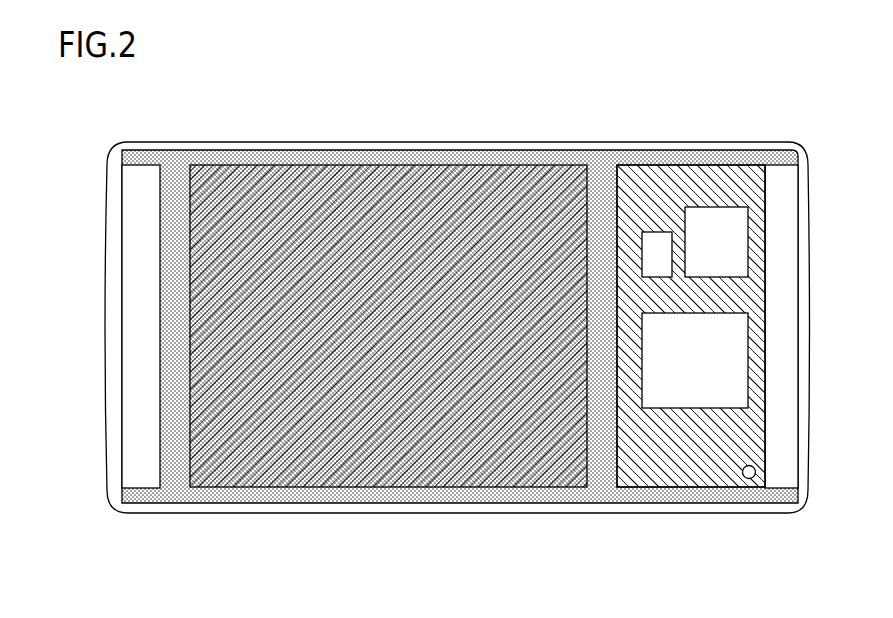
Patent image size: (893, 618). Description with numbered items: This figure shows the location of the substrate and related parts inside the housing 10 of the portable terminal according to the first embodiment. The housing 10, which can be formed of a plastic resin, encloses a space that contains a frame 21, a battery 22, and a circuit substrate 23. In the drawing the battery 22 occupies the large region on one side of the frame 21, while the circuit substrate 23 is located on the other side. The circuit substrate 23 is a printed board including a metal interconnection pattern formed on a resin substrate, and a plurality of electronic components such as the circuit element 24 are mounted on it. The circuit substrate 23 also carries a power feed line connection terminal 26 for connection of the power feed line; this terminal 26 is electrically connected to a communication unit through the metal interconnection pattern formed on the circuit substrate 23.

The housing 10 is at (497, 141).
The frame 21 is at (648, 165).
The battery 22 is at (373, 470).
The circuit substrate 23 is at (723, 472).
The circuit element 24 is at (675, 410).
The power feed line connection terminal 26 is at (753, 477).